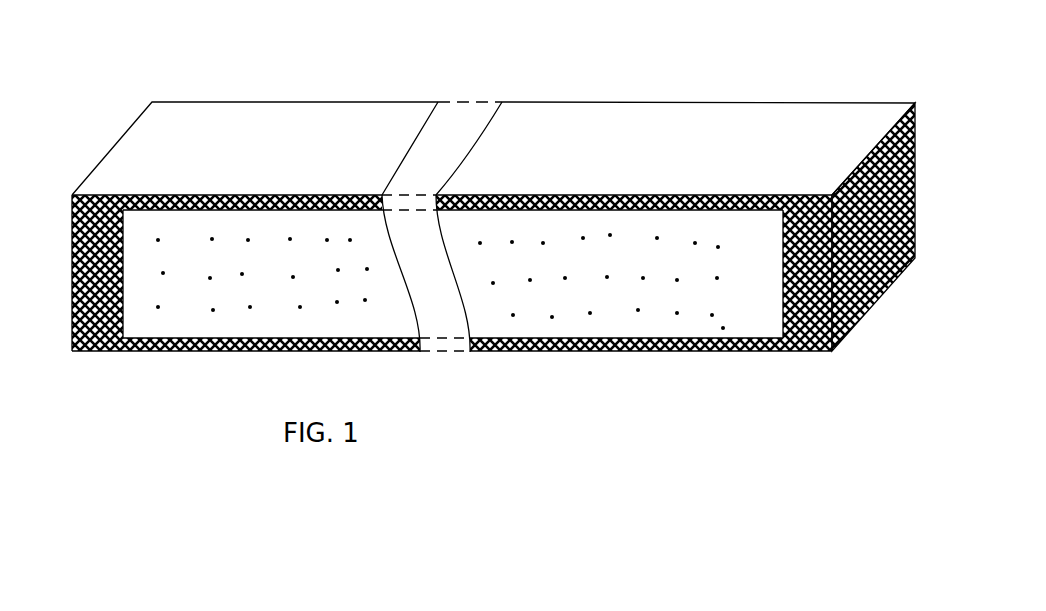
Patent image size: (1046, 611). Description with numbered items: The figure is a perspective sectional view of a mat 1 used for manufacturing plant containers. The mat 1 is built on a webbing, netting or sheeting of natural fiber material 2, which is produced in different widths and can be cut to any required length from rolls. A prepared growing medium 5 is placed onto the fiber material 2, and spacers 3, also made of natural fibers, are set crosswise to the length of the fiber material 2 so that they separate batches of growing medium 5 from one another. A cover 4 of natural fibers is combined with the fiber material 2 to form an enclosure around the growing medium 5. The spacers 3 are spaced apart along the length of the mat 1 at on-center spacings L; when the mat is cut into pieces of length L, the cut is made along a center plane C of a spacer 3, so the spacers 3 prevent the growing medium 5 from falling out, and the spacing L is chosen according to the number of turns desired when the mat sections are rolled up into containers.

The mat 1 is at (477, 213).
The natural fiber material 2 is at (130, 350).
The spacer 3 is at (73, 267).
The cover 4 is at (365, 115).
The growing medium 5 is at (587, 298).
The on-center spacing L is at (143, 137).
The center plane C is at (103, 187).